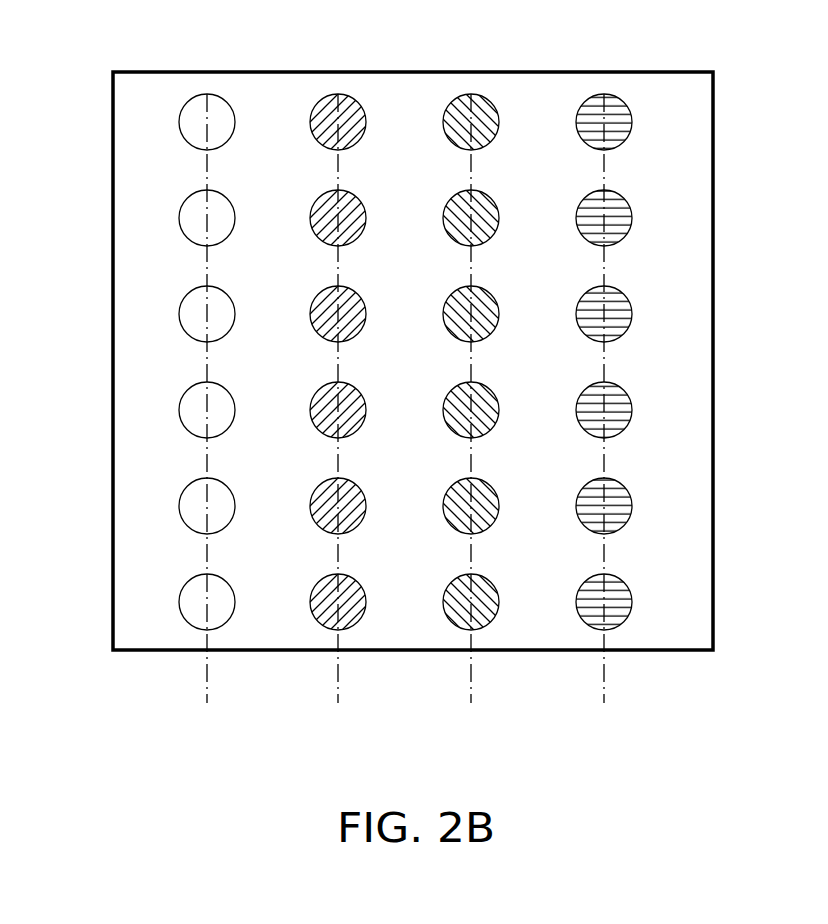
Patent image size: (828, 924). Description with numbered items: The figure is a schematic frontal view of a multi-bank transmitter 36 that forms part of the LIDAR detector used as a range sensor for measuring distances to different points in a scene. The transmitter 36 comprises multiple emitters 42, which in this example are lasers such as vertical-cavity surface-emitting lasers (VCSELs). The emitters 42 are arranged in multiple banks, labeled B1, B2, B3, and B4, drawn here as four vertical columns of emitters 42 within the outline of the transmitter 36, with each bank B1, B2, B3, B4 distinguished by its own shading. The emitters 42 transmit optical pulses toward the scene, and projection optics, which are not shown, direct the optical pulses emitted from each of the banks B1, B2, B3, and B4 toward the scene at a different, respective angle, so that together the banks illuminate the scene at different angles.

The transmitter 36 is at (113, 152).
The emitters 42 is at (386, 388).
The bank B1 is at (207, 420).
The bank B2 is at (338, 420).
The bank B3 is at (471, 420).
The bank B4 is at (604, 420).